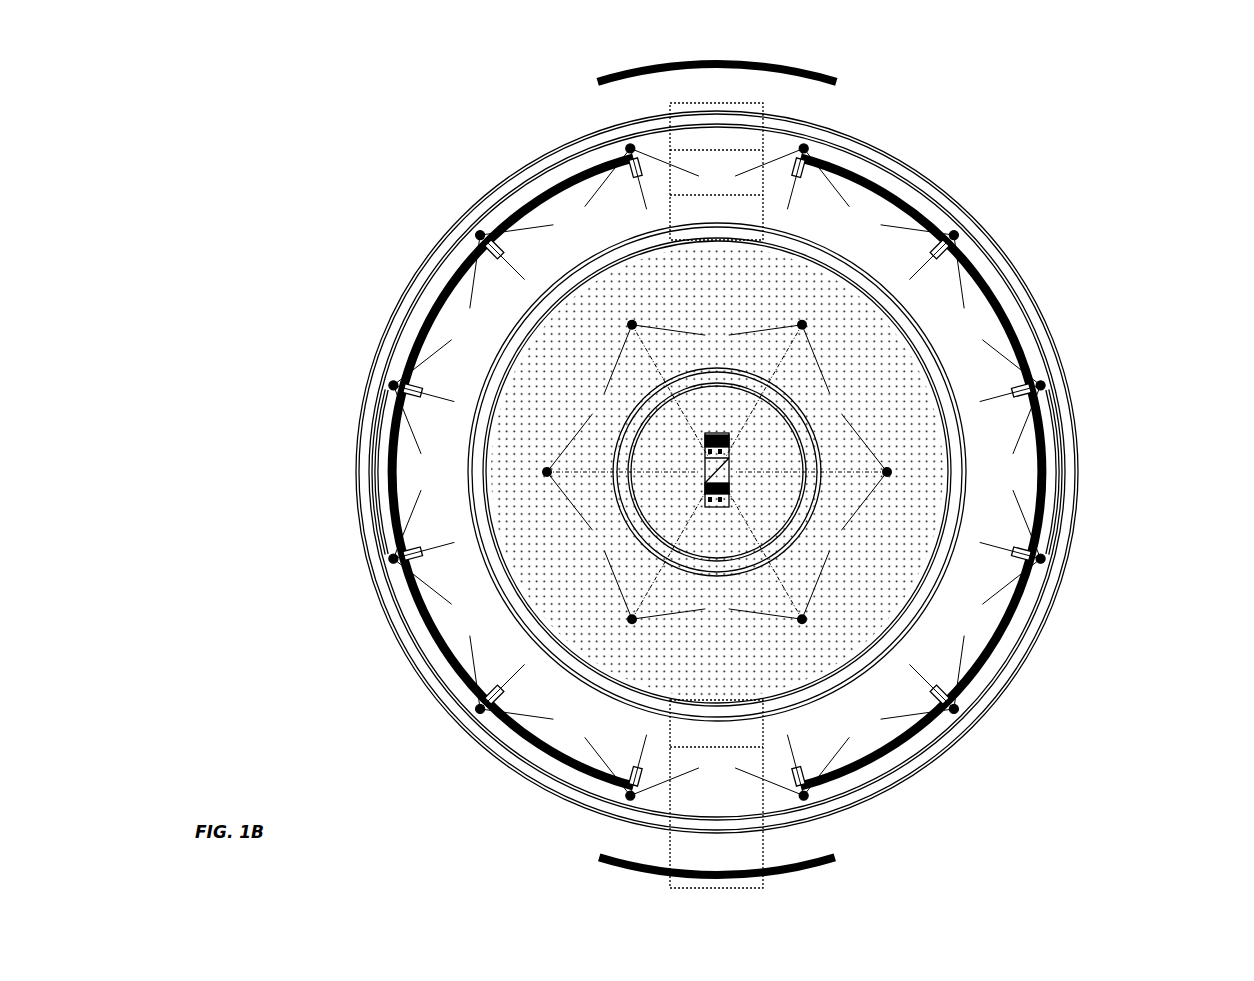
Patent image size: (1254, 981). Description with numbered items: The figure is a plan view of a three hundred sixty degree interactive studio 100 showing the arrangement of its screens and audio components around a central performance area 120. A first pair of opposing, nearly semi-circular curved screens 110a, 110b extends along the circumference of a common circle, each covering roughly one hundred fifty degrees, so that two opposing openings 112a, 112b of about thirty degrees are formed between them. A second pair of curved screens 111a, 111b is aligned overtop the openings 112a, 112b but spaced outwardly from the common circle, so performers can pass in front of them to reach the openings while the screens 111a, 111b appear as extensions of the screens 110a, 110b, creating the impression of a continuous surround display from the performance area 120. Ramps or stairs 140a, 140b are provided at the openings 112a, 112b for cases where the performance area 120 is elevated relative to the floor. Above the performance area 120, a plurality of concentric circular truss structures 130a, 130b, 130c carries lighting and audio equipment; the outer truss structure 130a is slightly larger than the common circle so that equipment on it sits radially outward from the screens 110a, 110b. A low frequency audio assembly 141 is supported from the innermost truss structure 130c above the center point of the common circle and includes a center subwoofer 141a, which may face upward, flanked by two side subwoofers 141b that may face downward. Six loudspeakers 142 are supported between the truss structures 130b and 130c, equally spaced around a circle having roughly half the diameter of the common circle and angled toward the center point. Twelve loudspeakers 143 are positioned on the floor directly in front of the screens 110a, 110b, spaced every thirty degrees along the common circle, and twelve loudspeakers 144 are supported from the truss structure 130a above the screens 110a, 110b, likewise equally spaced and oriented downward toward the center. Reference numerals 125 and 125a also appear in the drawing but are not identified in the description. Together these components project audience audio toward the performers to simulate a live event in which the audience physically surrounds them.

The 360 degree interactive studio 100 is at (298, 124).
The curved screen 110a is at (463, 262).
The curved screen 110b is at (994, 287).
The curved screen 111a is at (640, 66).
The curved screen 111b is at (812, 868).
The opening 112a is at (596, 111).
The opening 112b is at (598, 824).
The performance area 120 is at (893, 578).
The inner ring edge 125 is at (462, 648).
The inner ring portion 125a is at (556, 688).
The circular truss structure 130a is at (996, 713).
The circular truss structure 130b is at (972, 486).
The circular truss structure 130c is at (829, 452).
The ramp or stairs 140a is at (748, 139).
The ramp or stairs 140b is at (678, 850).
The low frequency audio assembly 141 is at (686, 492).
The center subwoofer 141a is at (736, 472).
The side subwoofer 141b is at (738, 440).
The loudspeaker 142 is at (448, 332).
The loudspeaker 143 is at (410, 410).
The loudspeaker 144 is at (391, 376).